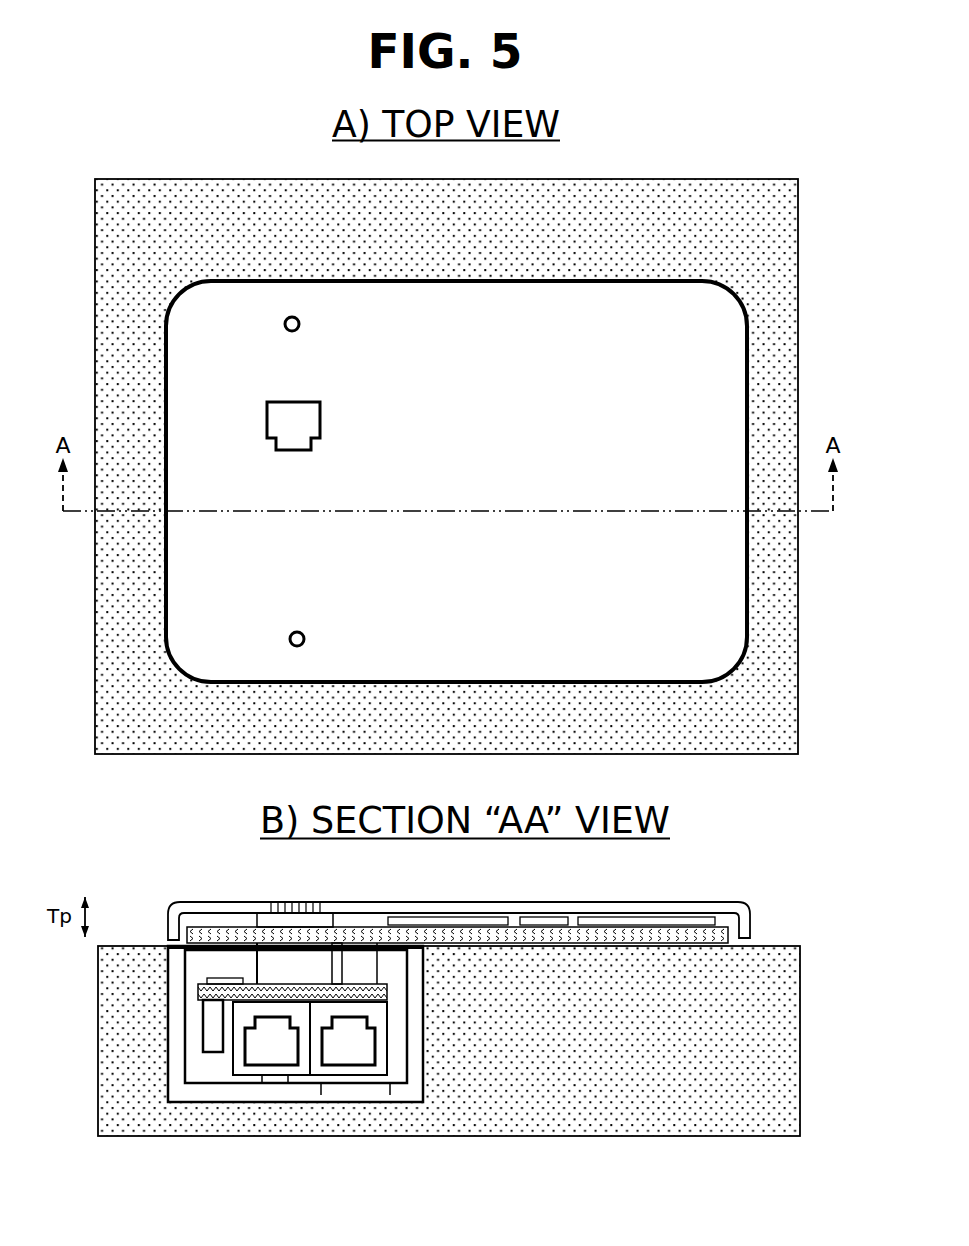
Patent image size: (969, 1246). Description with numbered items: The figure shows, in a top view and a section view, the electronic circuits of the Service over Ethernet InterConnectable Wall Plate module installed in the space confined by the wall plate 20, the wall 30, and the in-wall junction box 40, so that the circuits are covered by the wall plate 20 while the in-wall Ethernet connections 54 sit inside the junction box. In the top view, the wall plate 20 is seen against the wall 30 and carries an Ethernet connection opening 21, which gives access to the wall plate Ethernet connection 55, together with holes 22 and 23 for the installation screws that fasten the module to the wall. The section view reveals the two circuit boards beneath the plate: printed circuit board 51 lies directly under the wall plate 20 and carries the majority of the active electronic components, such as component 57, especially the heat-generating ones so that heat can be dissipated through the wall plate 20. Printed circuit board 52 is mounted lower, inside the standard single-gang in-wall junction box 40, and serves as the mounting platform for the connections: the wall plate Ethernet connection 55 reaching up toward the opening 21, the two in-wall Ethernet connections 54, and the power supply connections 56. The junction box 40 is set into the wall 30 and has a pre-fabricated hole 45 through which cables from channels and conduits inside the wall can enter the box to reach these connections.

The wall 30 is at (764, 158).
The wall plate 20 is at (668, 275).
The Ethernet connection opening 21 is at (306, 402).
The hole 22 is at (300, 318).
The hole 23 is at (302, 626).
The wall plate Ethernet connection 55 is at (289, 428).
The active electronic circuit component 57 is at (592, 922).
The printed circuit board 51 is at (682, 940).
The in-wall junction box 40 is at (165, 1055).
The printed circuit board 52 is at (197, 990).
The power supply connections 56 is at (216, 1055).
The hole 45 is at (355, 1090).
The in-wall Ethernet connections 54 is at (390, 1065).